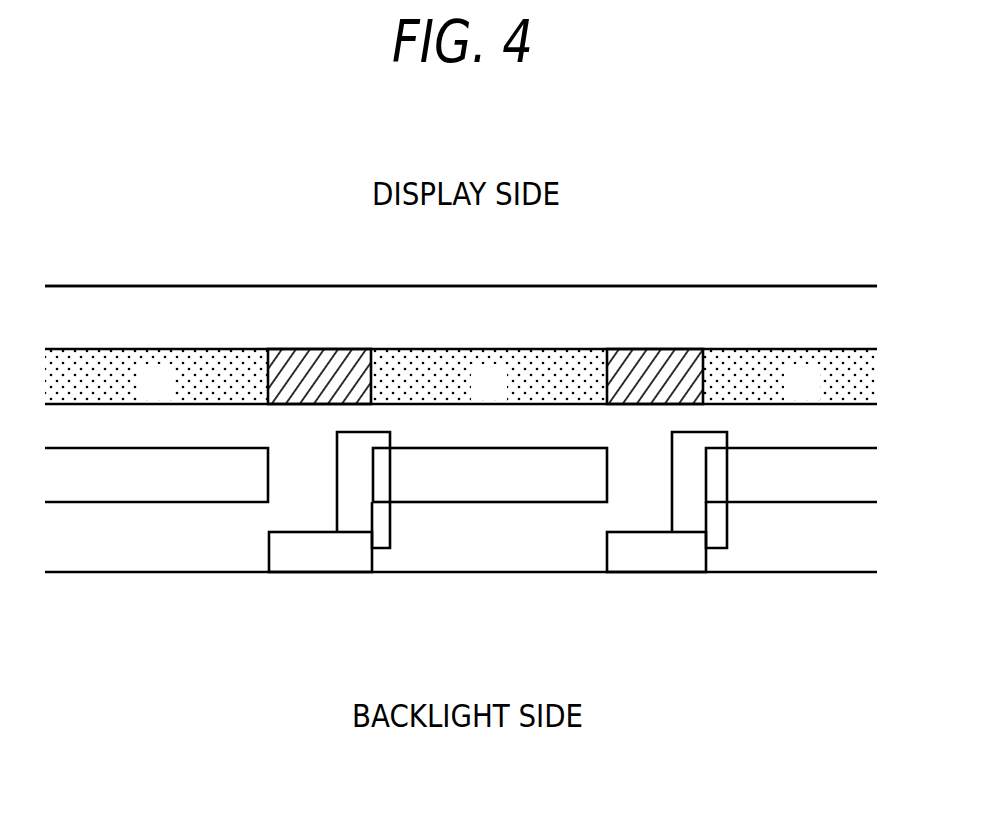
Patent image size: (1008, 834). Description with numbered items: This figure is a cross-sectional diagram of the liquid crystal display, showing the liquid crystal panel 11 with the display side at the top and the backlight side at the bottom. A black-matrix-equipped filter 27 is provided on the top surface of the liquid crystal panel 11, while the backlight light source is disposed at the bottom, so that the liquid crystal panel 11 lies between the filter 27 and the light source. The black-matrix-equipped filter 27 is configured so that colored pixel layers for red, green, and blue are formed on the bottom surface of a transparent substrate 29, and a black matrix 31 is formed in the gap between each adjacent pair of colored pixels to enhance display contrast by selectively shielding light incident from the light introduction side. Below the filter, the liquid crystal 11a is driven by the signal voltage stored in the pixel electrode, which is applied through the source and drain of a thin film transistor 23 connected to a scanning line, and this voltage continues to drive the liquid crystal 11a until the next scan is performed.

The liquid crystal panel 11 is at (813, 278).
The liquid crystal 11a is at (148, 503).
The TFT 23 is at (324, 573).
The black-matrix-equipped filter 27 is at (125, 278).
The transparent substrate 29 is at (230, 305).
The black matrix 31 is at (318, 348).